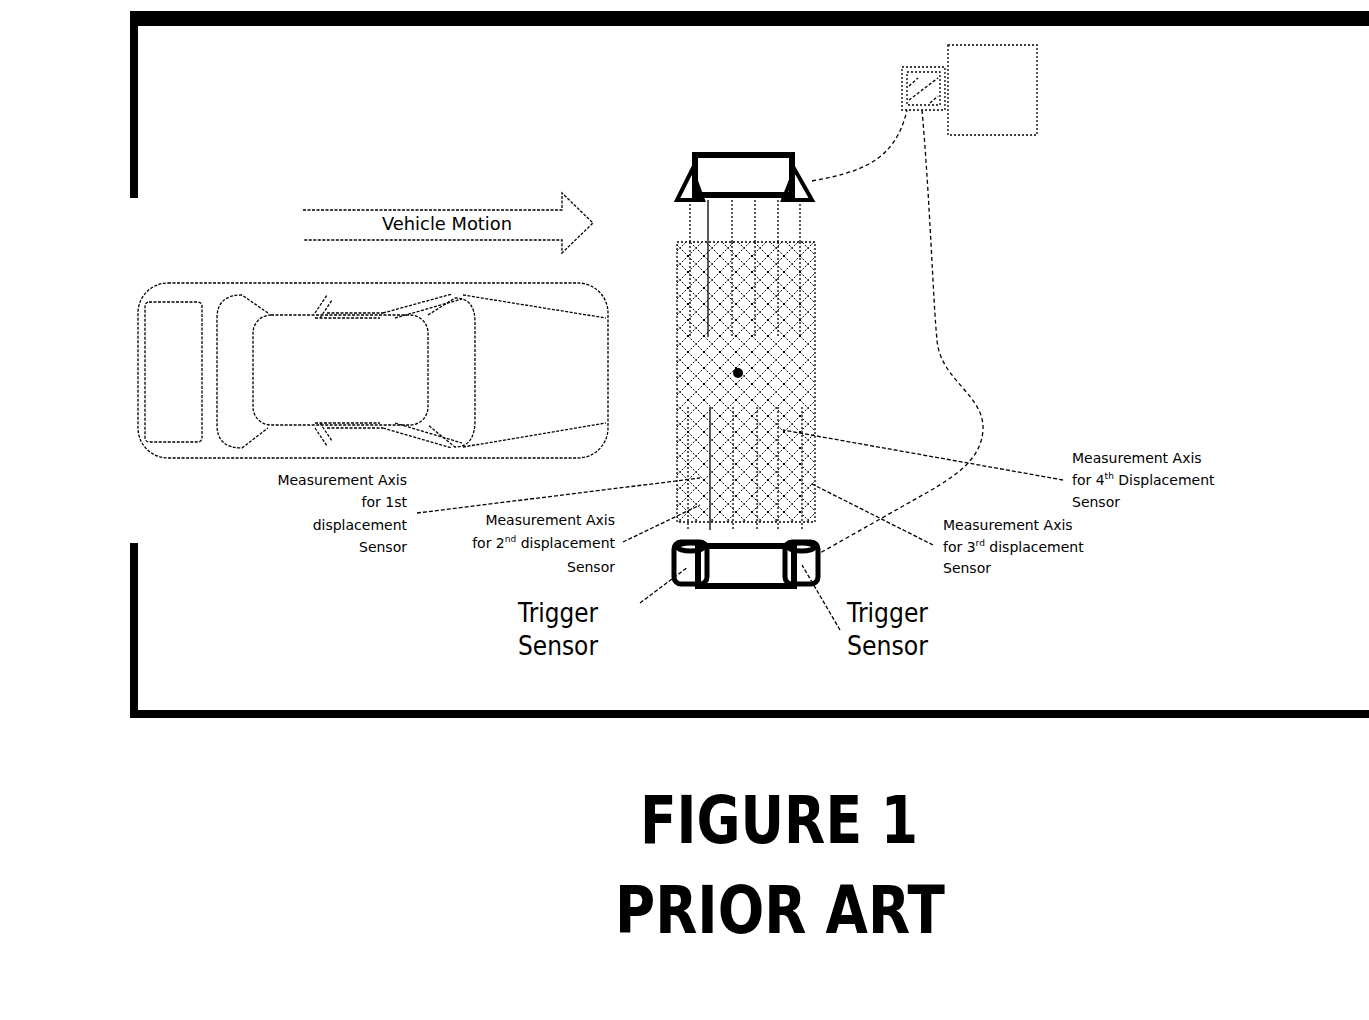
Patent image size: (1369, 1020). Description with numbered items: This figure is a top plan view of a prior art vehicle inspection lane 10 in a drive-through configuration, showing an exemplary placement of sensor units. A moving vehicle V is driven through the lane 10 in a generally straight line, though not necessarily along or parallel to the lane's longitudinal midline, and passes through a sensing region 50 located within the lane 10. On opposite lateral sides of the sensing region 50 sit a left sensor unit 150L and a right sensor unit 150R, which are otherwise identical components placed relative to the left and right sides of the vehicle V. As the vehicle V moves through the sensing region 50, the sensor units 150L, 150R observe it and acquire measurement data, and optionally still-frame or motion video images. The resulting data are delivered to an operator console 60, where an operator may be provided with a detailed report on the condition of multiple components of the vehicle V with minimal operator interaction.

The vehicle inspection lane 10 is at (330, 605).
The vehicle V is at (306, 362).
The sensing region 50 is at (755, 365).
The operator console 60 is at (913, 67).
The left sensor unit 150L is at (737, 150).
The right sensor unit 150R is at (745, 570).